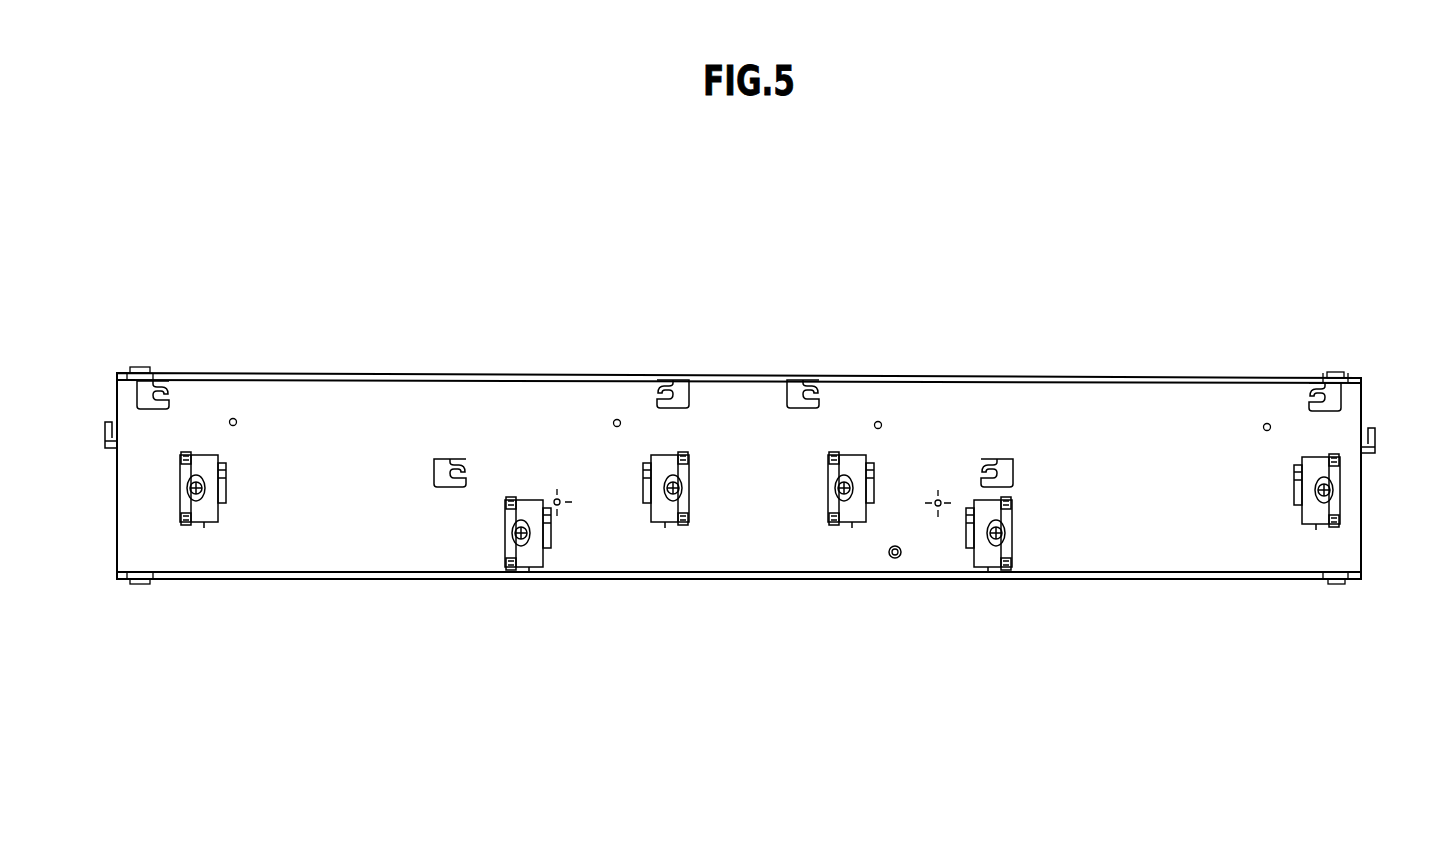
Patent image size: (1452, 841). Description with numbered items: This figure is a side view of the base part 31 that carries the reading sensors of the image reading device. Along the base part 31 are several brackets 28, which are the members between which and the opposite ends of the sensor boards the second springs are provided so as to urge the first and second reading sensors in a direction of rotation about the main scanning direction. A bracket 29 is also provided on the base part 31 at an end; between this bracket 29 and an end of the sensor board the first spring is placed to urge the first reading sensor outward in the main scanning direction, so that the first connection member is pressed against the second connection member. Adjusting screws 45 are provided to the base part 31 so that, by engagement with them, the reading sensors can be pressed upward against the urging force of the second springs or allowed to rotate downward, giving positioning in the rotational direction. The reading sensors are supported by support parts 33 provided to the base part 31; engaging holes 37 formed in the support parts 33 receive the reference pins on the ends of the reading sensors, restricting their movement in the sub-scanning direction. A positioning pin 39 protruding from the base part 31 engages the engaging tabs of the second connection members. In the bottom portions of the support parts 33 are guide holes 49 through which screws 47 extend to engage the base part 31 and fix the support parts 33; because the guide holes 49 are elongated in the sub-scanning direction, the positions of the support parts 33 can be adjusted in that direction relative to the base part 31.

The bracket 28 is at (158, 407).
The bracket 29 is at (105, 445).
The base part 31 is at (1122, 583).
The support part 33 is at (205, 517).
The engaging hole 37 is at (226, 471).
The positioning pin 39 is at (895, 558).
The adjusting screw 45 is at (231, 419).
The screw 47 is at (1331, 497).
The guide hole 49 is at (1333, 482).